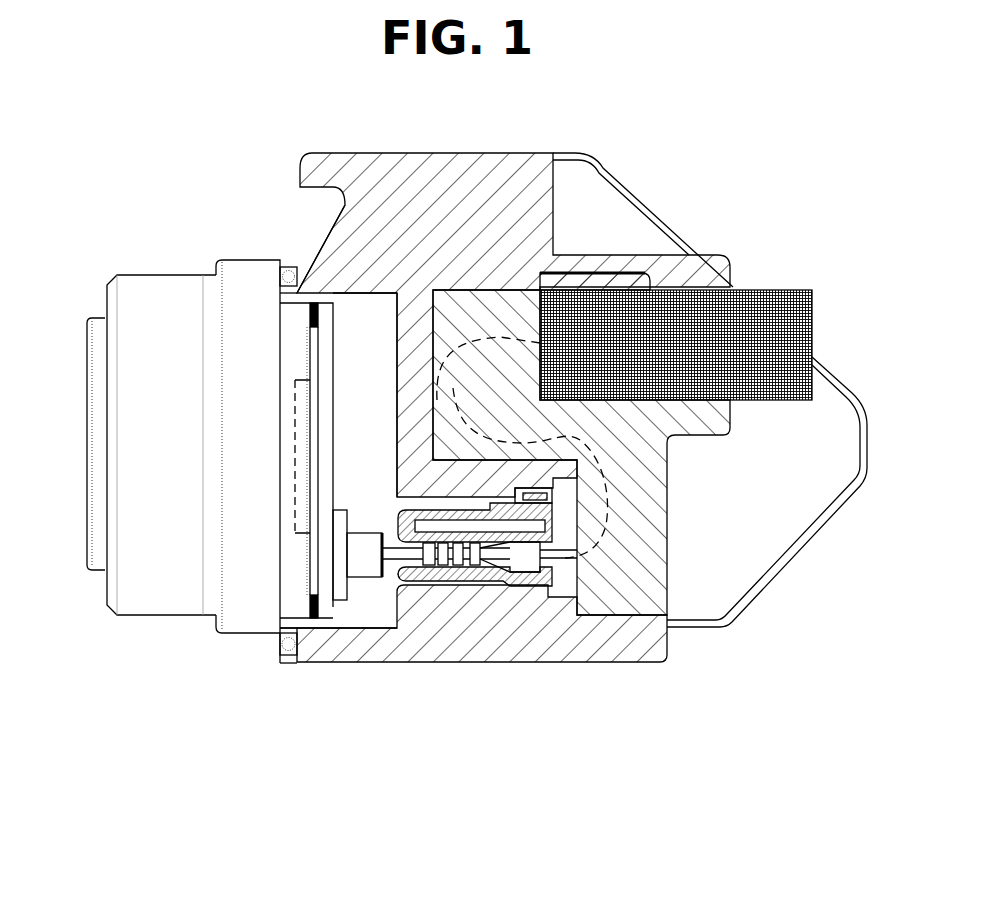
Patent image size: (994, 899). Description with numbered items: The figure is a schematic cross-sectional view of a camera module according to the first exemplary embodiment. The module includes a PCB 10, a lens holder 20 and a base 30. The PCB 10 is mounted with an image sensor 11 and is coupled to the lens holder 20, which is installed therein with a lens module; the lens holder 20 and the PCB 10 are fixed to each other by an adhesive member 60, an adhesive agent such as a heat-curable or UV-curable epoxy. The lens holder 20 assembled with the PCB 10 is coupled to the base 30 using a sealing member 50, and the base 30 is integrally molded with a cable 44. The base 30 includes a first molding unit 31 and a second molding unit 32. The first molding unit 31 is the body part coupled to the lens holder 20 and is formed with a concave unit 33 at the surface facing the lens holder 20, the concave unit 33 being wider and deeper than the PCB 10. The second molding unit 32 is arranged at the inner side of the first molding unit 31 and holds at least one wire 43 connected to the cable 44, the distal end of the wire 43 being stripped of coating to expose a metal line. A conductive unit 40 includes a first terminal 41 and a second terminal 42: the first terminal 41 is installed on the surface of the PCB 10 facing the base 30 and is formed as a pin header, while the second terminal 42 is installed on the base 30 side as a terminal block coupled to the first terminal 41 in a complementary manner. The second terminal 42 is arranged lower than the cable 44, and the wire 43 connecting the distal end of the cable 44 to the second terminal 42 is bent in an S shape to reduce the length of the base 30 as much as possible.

The PCB 10 is at (332, 606).
The image sensor 11 is at (310, 533).
The lens holder 20 is at (140, 310).
The base 30 is at (594, 408).
The first molding unit 31 is at (720, 582).
The second molding unit 32 is at (653, 517).
The concave unit 33 is at (371, 326).
The conductive unit 40 is at (465, 634).
The first terminal 41 is at (377, 575).
The second terminal 42 is at (463, 562).
The wire 43 is at (549, 603).
The cable 44 is at (784, 292).
The sealing member 50 is at (288, 656).
The adhesive member 60 is at (313, 303).